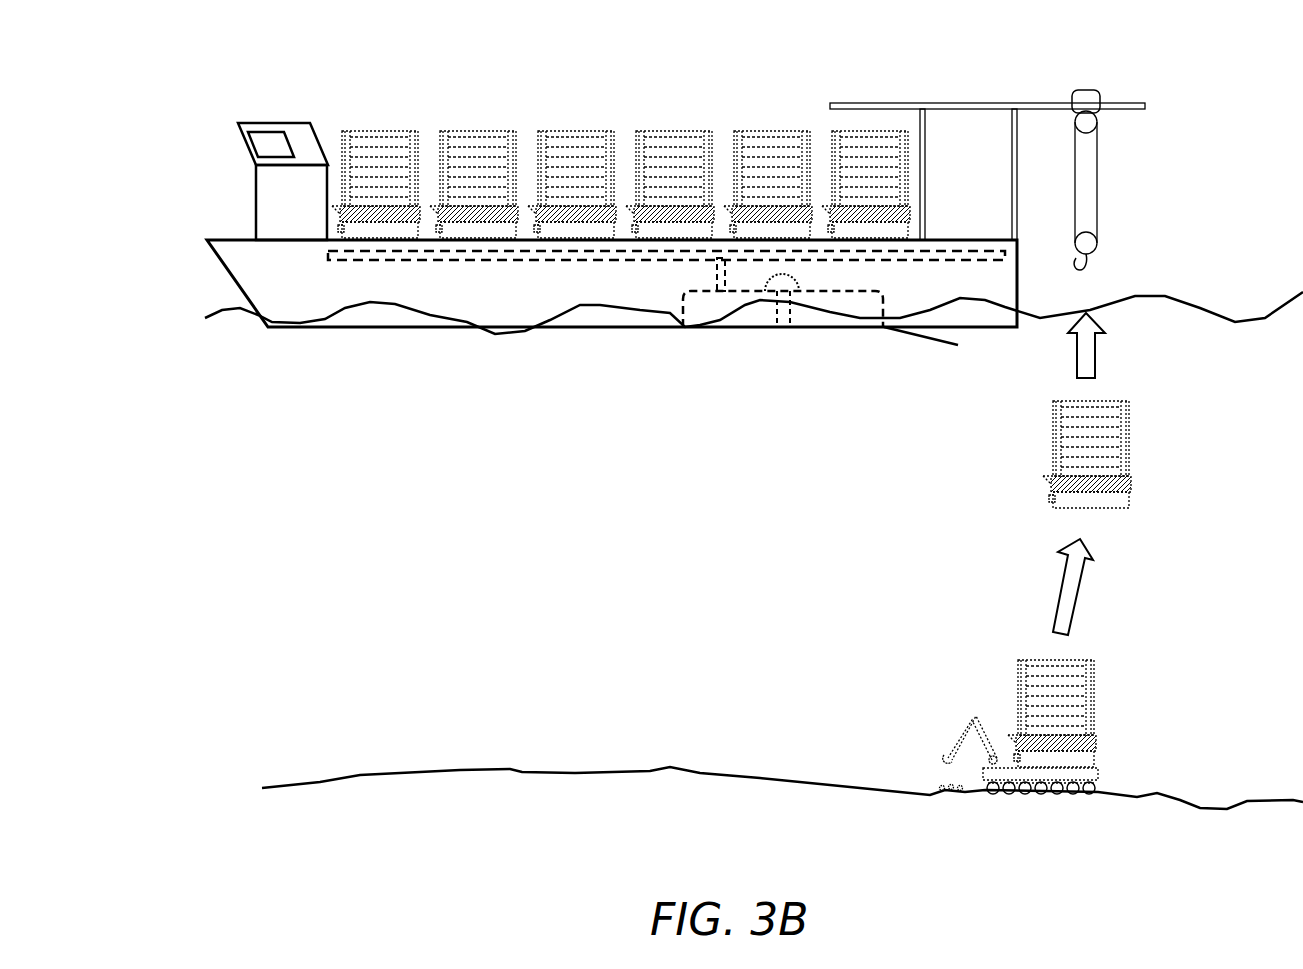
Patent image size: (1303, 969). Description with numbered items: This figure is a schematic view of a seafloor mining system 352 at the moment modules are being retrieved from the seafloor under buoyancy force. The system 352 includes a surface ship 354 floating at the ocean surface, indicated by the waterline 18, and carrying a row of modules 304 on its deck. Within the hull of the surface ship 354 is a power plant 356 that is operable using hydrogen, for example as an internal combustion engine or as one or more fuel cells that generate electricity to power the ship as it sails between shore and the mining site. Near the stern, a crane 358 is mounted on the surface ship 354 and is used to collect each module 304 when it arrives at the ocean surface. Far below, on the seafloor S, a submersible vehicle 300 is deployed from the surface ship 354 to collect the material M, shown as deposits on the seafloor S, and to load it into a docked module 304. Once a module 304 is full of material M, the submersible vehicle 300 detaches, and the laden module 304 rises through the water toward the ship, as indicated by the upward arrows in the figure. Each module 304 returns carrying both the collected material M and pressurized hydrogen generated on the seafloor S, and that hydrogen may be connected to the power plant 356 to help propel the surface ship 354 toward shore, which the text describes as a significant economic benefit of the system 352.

The system 352 is at (552, 47).
The surface ship 354 is at (224, 240).
The crane 358 is at (1095, 92).
The power plant 356 is at (768, 292).
The waterline 18 is at (927, 338).
The module 304 is at (668, 130).
The submersible vehicle 300 is at (1100, 775).
The seafloor S is at (440, 768).
The material M is at (935, 785).